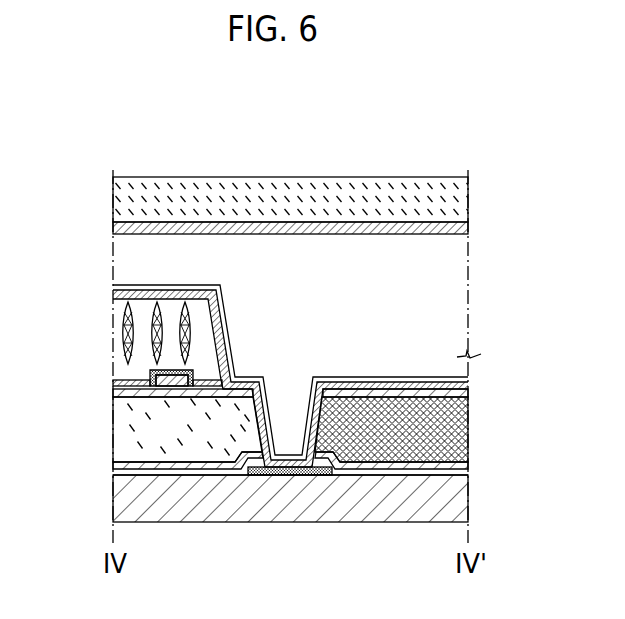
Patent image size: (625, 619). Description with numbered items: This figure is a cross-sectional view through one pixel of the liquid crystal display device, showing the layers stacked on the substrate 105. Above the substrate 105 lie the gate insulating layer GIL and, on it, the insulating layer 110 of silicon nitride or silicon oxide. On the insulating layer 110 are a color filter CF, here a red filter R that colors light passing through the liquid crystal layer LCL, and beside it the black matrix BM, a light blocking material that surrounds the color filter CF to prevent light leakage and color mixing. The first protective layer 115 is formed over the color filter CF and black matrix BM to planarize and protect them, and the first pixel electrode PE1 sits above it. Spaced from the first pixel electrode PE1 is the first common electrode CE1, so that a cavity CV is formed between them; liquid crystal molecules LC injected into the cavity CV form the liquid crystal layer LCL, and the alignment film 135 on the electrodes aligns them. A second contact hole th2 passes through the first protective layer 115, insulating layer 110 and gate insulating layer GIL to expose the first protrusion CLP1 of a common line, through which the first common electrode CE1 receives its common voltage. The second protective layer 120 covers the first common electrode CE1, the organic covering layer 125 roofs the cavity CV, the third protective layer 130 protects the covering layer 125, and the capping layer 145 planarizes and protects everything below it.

The substrate 105 is at (117, 503).
The insulating layer 110 is at (118, 462).
The gate insulating layer GIL is at (116, 474).
The first protective layer 115 is at (116, 393).
The color filter CF is at (125, 436).
The red filter R is at (187, 429).
The black matrix BM is at (391, 429).
The first pixel electrode PE1 is at (159, 381).
The first protrusion CLP1 is at (276, 472).
The liquid crystal molecules LC is at (118, 366).
The liquid crystal layer LCL is at (150, 344).
The cavity CV is at (137, 312).
The alignment film 135 is at (116, 294).
The first common electrode CE1 is at (116, 288).
The second protective layer 120 is at (116, 282).
The third protective layer 130 is at (115, 230).
The capping layer 145 is at (115, 193).
The covering layer 125 is at (456, 284).
The second contact hole th2 is at (307, 410).